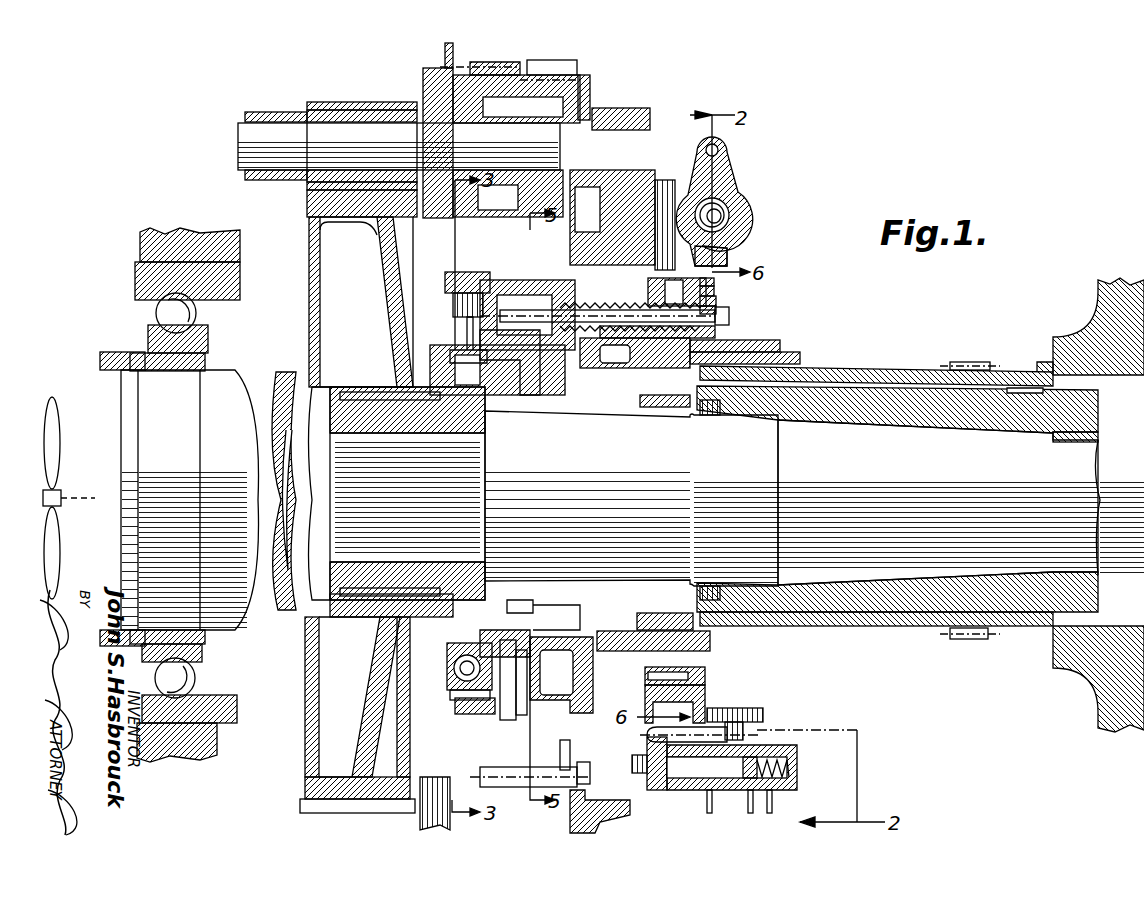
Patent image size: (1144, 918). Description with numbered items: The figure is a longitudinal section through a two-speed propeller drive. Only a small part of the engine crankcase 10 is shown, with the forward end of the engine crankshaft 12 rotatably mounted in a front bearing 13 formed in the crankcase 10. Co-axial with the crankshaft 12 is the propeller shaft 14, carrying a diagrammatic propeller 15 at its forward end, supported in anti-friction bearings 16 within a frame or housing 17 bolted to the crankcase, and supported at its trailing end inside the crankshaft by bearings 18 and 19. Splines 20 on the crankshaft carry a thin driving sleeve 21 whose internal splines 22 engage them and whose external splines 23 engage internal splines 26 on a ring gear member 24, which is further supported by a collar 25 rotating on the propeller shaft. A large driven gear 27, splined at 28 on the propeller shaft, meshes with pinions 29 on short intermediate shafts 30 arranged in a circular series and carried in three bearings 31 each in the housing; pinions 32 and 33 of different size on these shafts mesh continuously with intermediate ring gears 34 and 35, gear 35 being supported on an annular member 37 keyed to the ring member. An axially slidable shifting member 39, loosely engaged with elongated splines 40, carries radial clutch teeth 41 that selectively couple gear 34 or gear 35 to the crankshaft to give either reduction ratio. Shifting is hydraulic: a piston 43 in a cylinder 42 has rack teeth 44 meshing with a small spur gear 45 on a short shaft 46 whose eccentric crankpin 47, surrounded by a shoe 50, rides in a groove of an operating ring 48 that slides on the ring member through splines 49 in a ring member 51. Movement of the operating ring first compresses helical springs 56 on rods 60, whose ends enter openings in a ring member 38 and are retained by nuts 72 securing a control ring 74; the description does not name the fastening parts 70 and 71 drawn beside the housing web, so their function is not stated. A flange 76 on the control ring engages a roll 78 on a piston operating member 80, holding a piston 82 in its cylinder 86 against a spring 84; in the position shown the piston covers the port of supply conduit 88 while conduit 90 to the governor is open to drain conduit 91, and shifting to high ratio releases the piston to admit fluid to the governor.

The engine crankcase 10 is at (1100, 710).
The engine crankshaft 12 is at (920, 400).
The front bearing 13 is at (1092, 325).
The propeller shaft 14 is at (225, 400).
The propeller 15 is at (54, 400).
The anti-friction bearings 16 is at (195, 345).
The frame or housing 17 is at (182, 250).
The bearing 18 is at (725, 416).
The bearing 19 is at (1085, 442).
The splines 20 is at (1004, 630).
The sleeve 21 is at (800, 378).
The internal splines 22 is at (1015, 386).
The external splines 23 is at (692, 365).
The ring gear member 24 is at (722, 348).
The collar 25 is at (520, 613).
The internal splines 26 is at (716, 360).
The driven gear 27 is at (385, 300).
The splines 28 is at (355, 390).
The pinions 29 is at (330, 102).
The intermediate shafts 30 is at (240, 140).
The bearings 31 is at (245, 112).
The pinion 32 is at (485, 72).
The pinion 33 is at (545, 62).
The intermediate ring gear 34 is at (450, 770).
The intermediate ring gear 35 is at (580, 276).
The annular member 37 is at (578, 368).
The ring member 38 is at (450, 665).
The shifting member 39 is at (561, 675).
The elongated splines 40 is at (504, 680).
The radial clutch teeth 41 is at (521, 705).
The cylinder 42 is at (730, 180).
The piston 43 is at (740, 207).
The rack teeth 44 is at (745, 215).
The spur gear 45 is at (727, 253).
The shaft 46 is at (665, 190).
The crankpin 47 is at (716, 292).
The operating ring 48 is at (716, 310).
The splines 49 is at (716, 332).
The shoe 50 is at (652, 292).
The ring member 51 is at (705, 688).
The helical springs 56 is at (668, 368).
The rods 60 is at (630, 333).
The bolt 70 is at (455, 318).
The nut 71 is at (455, 290).
The nut 72 is at (730, 318).
The control ring 74 is at (716, 300).
The flange 76 is at (716, 283).
The roll 78 is at (763, 715).
The piston operating member 80 is at (655, 792).
The piston 82 is at (680, 770).
The spring 84 is at (790, 768).
The cylinder 86 is at (797, 785).
The conduit 88 is at (708, 812).
The conduit 90 is at (750, 812).
The drain conduit 91 is at (770, 812).